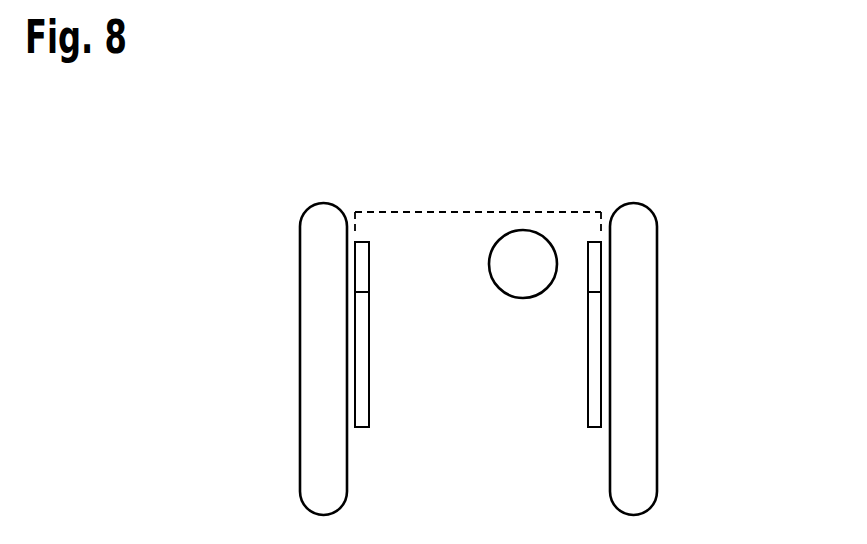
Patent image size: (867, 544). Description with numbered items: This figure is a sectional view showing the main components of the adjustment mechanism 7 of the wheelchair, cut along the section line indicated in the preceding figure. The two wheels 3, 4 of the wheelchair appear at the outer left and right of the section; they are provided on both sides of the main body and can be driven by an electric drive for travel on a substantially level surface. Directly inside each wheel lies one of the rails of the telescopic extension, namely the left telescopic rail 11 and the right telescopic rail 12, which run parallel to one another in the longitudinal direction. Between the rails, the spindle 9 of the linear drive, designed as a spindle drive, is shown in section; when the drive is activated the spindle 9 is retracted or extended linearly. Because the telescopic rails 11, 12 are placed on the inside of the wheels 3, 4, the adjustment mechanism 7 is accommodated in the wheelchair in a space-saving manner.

The adjustment mechanism 7 is at (667, 135).
The wheel 3 is at (657, 360).
The wheel 4 is at (300, 360).
The spindle 9 is at (510, 232).
The left telescopic rail 11 is at (588, 357).
The right telescopic rail 12 is at (369, 400).